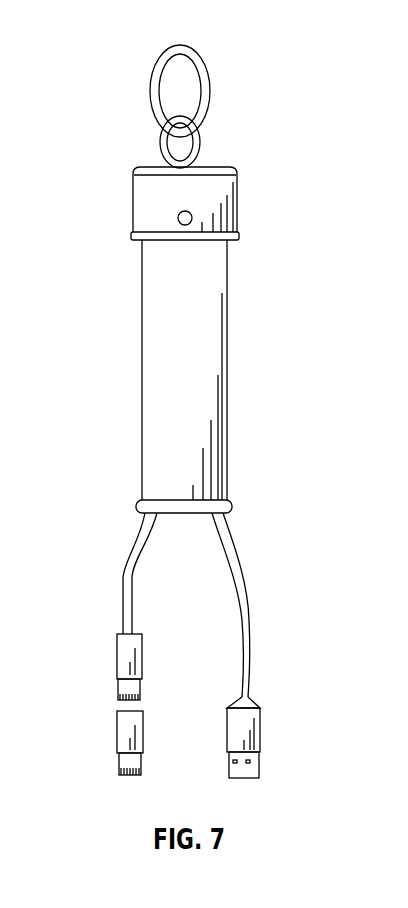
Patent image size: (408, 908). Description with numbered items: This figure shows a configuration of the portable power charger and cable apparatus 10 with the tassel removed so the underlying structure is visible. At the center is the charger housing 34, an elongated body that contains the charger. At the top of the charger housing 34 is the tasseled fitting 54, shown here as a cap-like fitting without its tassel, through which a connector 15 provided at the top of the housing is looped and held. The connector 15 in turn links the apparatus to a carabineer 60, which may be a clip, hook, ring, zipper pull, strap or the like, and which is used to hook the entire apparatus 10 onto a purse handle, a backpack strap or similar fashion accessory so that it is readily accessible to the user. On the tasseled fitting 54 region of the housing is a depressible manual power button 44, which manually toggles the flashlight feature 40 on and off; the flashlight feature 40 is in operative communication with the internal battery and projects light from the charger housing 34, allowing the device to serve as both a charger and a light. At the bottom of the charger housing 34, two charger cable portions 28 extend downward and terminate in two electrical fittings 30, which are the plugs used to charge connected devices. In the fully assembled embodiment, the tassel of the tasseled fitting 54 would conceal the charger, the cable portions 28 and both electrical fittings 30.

The portable power charger and cable apparatus 10 is at (295, 118).
The carabineer 60 is at (203, 54).
The connector 15 is at (200, 148).
The tasseled fitting 54 is at (238, 203).
The manual power button 44 is at (178, 219).
The charger housing 34 is at (228, 392).
The flashlight feature 40 is at (232, 506).
The charger cable portions 28 is at (239, 577).
The electrical fittings 30 is at (103, 727).